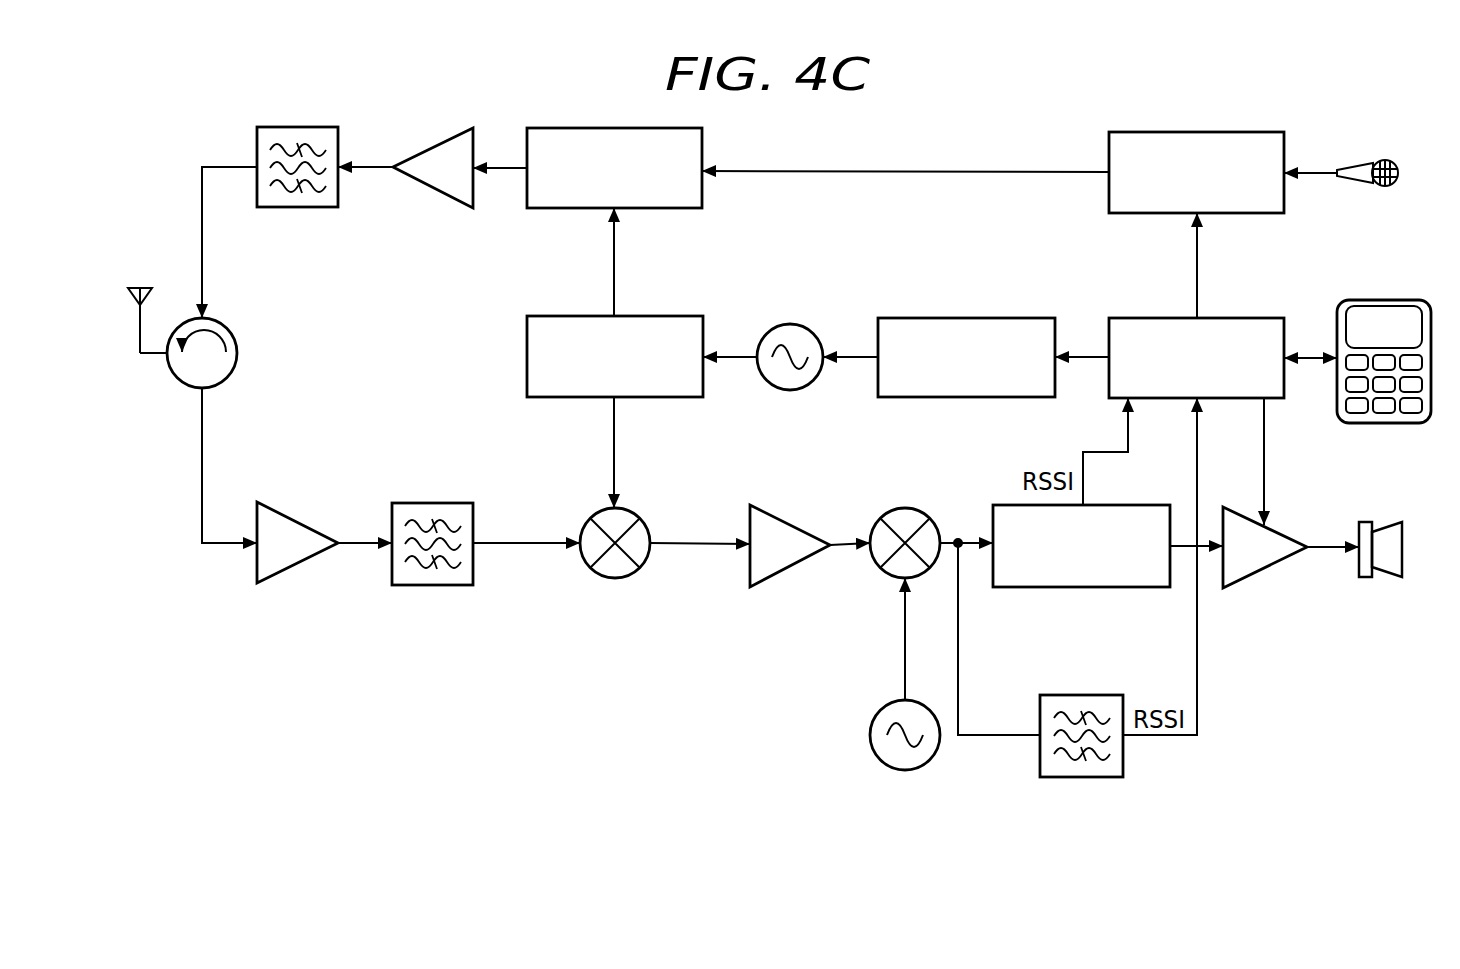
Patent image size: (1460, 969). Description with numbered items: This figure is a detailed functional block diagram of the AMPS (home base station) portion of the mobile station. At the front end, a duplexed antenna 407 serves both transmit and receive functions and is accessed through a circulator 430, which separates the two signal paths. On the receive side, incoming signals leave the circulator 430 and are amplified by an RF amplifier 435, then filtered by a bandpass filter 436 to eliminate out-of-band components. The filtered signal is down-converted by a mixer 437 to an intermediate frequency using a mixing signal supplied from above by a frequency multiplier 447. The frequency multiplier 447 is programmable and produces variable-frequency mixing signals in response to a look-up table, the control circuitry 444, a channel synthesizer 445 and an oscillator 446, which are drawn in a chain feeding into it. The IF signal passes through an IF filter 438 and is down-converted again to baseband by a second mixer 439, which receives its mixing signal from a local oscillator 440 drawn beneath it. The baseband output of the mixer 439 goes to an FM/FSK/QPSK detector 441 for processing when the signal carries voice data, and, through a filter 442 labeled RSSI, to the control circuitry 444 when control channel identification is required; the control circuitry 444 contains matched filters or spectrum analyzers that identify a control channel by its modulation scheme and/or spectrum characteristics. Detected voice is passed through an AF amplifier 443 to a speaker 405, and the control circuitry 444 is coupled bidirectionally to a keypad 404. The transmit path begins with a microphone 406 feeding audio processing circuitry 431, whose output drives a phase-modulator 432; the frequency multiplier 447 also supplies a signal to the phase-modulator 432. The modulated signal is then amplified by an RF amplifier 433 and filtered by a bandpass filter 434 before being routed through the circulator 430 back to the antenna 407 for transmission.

The keypad 404 is at (1400, 298).
The speaker 405 is at (1368, 578).
The microphone 406 is at (1370, 165).
The antenna 407 is at (135, 287).
The circulator 430 is at (185, 383).
The audio processing circuitry 431 is at (1255, 132).
The phase-modulator 432 is at (555, 127).
The RF amplifier 433 is at (432, 145).
The bandpass filter 434 is at (278, 125).
The RF amplifier 435 is at (297, 520).
The bandpass filter 436 is at (412, 588).
The mixer 437 is at (612, 580).
The IF filter 438 is at (790, 520).
The mixer 439 is at (885, 580).
The local oscillator 440 is at (885, 765).
The FM/FSK/QPSK detector 441 is at (1012, 590).
The filter 442 is at (1092, 780).
The AF amplifier 443 is at (1265, 572).
The control circuitry 444 is at (1255, 318).
The channel synthesizer 445 is at (1025, 318).
The oscillator 446 is at (790, 323).
The frequency multiplier 447 is at (548, 316).